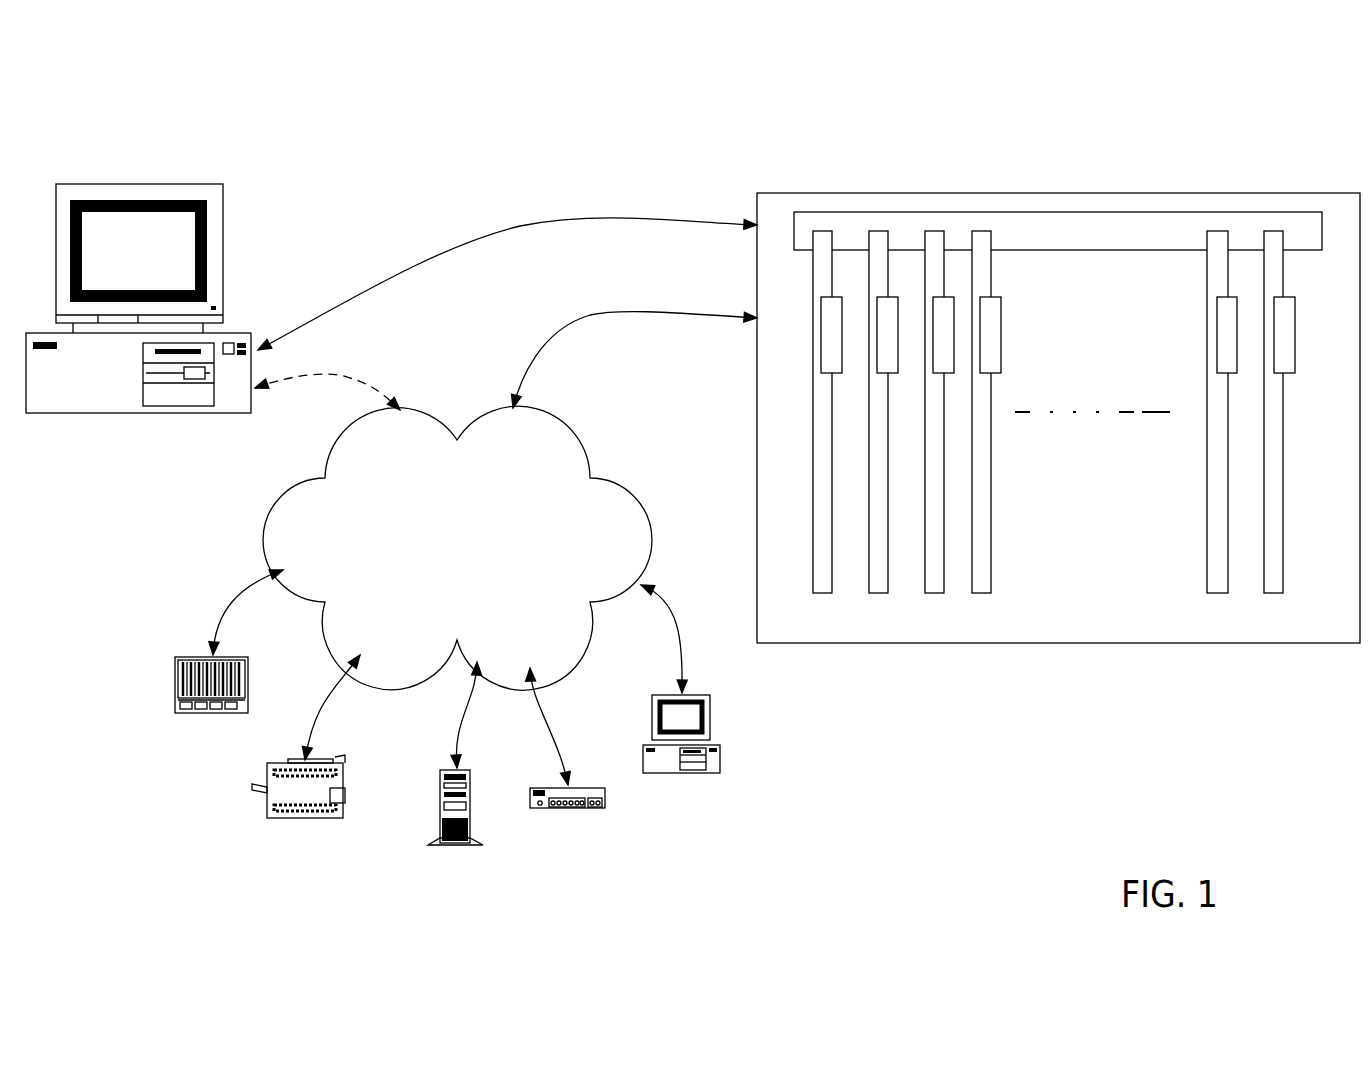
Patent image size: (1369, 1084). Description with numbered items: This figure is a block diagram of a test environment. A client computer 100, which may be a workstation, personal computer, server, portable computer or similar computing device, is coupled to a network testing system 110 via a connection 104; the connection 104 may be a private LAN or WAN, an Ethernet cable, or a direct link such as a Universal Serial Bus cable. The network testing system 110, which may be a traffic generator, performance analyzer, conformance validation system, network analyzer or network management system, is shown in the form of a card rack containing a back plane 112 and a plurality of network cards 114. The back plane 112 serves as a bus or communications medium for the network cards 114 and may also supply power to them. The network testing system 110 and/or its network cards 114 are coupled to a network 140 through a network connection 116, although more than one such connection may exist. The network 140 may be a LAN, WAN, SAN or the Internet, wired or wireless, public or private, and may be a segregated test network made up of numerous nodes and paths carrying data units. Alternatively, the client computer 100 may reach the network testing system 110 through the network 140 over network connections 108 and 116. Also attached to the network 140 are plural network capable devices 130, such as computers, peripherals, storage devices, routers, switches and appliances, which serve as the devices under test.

The client computer 100 is at (142, 184).
The connection 104 is at (510, 231).
The network connection 108 is at (350, 377).
The network testing system 110 is at (1058, 445).
The back plane 112 is at (865, 193).
The network cards 114 is at (1298, 595).
The network connection 116 is at (615, 312).
The network capable devices 130 is at (447, 739).
The network 140 is at (457, 548).